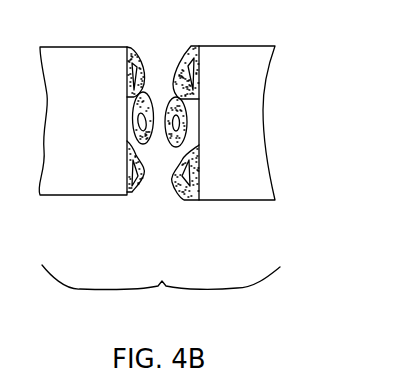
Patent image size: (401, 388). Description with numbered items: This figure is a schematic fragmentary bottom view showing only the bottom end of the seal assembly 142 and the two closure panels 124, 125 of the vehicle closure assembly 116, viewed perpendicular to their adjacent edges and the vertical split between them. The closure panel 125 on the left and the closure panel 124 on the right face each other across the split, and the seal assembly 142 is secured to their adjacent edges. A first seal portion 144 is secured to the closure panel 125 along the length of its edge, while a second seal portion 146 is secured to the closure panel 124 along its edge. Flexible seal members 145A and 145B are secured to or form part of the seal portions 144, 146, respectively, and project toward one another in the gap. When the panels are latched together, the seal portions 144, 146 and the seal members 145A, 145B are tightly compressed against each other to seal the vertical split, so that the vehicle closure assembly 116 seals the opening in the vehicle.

The vehicle closure assembly 116 is at (161, 293).
The closure panel 124 is at (245, 202).
The closure panel 125 is at (100, 198).
The seal assembly 142 is at (170, 226).
The first seal portion 144 is at (133, 192).
The flexible seal member 145A is at (147, 94).
The flexible seal member 145B is at (173, 98).
The second seal portion 146 is at (182, 200).